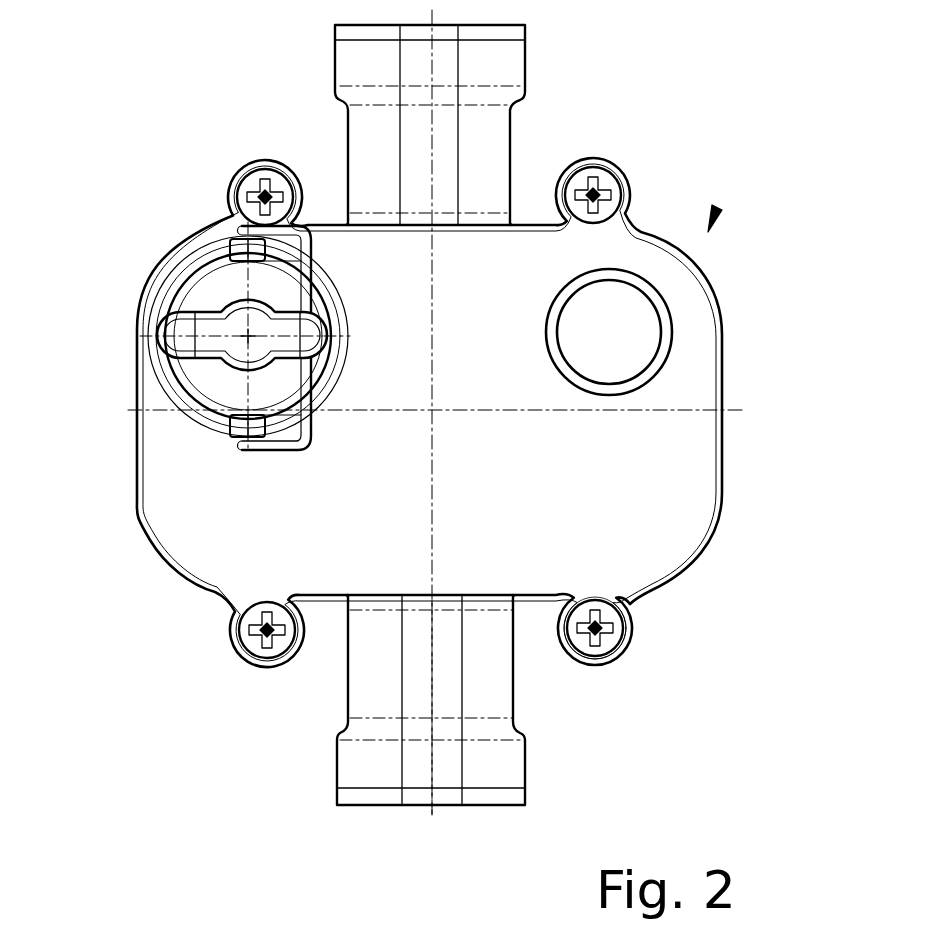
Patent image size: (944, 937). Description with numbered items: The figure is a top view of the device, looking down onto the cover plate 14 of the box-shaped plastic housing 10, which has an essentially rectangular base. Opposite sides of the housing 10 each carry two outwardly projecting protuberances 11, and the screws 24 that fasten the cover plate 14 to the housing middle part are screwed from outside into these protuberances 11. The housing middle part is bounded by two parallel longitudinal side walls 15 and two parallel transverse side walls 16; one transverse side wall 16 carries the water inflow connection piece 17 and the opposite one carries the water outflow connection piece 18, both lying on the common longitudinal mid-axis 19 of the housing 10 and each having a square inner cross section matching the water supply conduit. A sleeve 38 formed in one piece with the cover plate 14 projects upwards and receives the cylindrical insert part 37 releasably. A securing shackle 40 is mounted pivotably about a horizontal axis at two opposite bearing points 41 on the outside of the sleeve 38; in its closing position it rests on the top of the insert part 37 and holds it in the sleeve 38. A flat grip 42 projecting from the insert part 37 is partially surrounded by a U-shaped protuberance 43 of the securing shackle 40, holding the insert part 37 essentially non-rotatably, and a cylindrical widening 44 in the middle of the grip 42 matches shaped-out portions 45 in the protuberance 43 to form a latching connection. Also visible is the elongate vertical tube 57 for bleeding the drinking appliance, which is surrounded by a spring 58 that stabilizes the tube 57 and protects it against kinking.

The housing 10 is at (716, 210).
The protuberances 11 is at (262, 663).
The cover plate 14 is at (578, 528).
The longitudinal side walls 15 is at (137, 500).
The transverse side walls 16 is at (530, 227).
The water inflow connection piece 17 is at (497, 687).
The water outflow connection piece 18 is at (493, 141).
The longitudinal mid-axis 19 is at (432, 697).
The screws 24 is at (613, 638).
The insert part 37 is at (203, 375).
The sleeve 38 is at (217, 417).
The securing shackle 40 is at (325, 450).
The bearing points 41 is at (230, 433).
The grip 42 is at (180, 333).
The U-shaped protuberance 43 is at (200, 295).
The cylindrical widening 44 is at (225, 290).
The shaped-out portions 45 is at (263, 290).
The tube 57 is at (637, 327).
The spring 58 is at (668, 360).